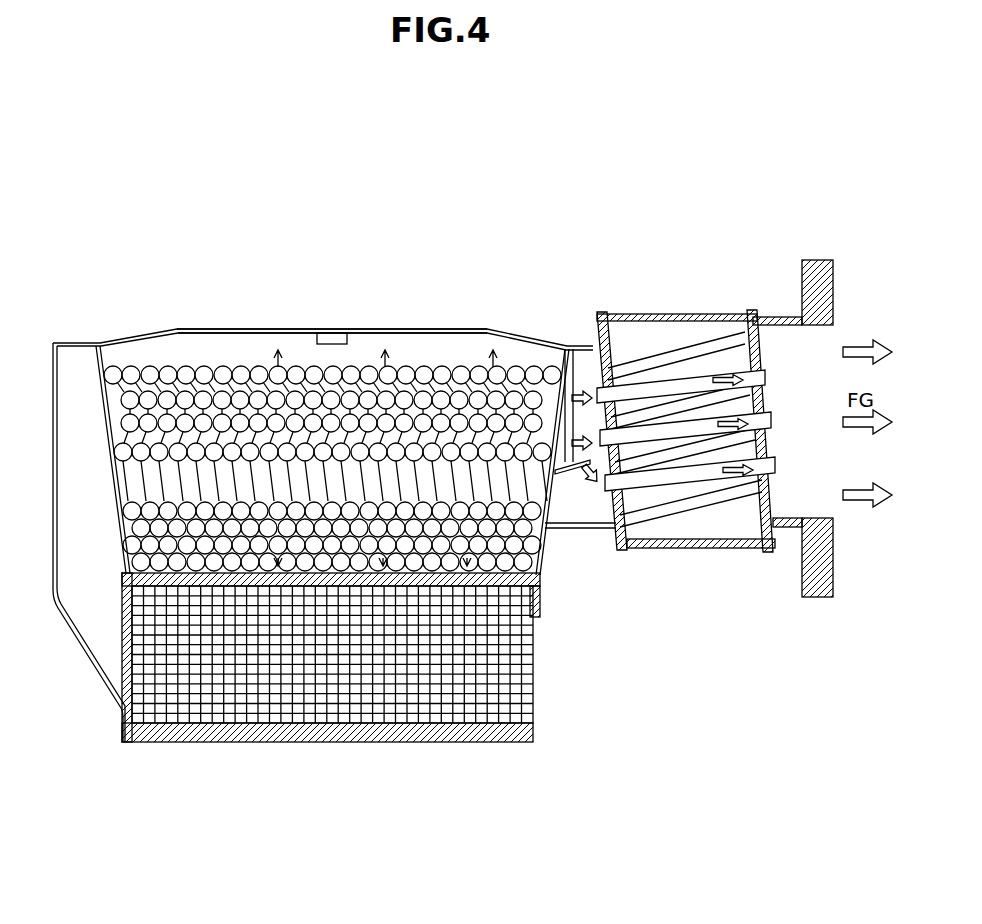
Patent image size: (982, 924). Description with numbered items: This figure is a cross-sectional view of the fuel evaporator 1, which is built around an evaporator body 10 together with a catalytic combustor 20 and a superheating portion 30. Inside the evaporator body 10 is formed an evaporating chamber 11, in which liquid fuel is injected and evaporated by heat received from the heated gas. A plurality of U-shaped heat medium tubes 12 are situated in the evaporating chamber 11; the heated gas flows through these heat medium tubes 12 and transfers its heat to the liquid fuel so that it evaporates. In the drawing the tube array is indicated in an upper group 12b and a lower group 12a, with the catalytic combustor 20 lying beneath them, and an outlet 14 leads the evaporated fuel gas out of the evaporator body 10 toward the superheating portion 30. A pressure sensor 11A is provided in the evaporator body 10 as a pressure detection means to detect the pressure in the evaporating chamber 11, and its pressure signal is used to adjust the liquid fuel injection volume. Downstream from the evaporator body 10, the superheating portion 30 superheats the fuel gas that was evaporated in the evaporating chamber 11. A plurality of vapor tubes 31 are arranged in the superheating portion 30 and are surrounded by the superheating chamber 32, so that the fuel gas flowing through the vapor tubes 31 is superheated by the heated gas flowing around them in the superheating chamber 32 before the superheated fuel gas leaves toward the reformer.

The fuel evaporator 1 is at (435, 243).
The evaporator body 10 is at (305, 328).
The evaporating chamber 11 is at (203, 350).
The pressure sensor 11A is at (335, 340).
The heat medium tubes 12 is at (311, 420).
The lower catalyst tube group 12a is at (122, 508).
The upper catalyst tube group 12b is at (104, 372).
The gas outlet 14 is at (567, 347).
The catalytic combustor 20 is at (342, 678).
The superheating portion 30 is at (685, 415).
The vapor tubes 31 is at (700, 383).
The superheating chamber 32 is at (705, 528).